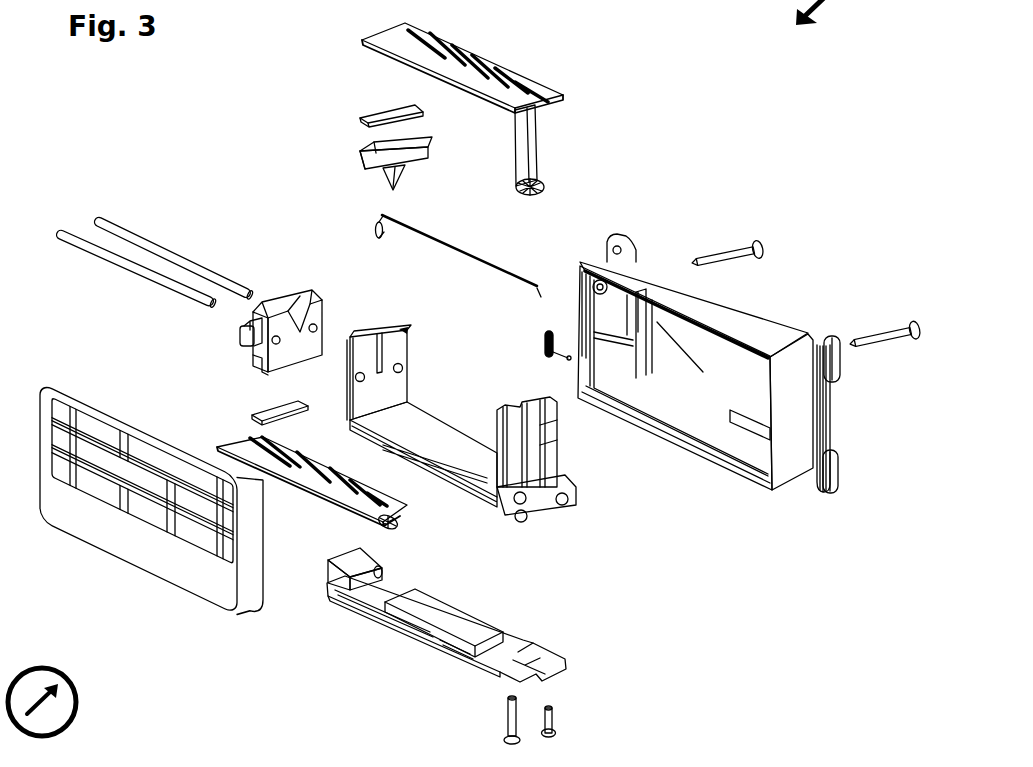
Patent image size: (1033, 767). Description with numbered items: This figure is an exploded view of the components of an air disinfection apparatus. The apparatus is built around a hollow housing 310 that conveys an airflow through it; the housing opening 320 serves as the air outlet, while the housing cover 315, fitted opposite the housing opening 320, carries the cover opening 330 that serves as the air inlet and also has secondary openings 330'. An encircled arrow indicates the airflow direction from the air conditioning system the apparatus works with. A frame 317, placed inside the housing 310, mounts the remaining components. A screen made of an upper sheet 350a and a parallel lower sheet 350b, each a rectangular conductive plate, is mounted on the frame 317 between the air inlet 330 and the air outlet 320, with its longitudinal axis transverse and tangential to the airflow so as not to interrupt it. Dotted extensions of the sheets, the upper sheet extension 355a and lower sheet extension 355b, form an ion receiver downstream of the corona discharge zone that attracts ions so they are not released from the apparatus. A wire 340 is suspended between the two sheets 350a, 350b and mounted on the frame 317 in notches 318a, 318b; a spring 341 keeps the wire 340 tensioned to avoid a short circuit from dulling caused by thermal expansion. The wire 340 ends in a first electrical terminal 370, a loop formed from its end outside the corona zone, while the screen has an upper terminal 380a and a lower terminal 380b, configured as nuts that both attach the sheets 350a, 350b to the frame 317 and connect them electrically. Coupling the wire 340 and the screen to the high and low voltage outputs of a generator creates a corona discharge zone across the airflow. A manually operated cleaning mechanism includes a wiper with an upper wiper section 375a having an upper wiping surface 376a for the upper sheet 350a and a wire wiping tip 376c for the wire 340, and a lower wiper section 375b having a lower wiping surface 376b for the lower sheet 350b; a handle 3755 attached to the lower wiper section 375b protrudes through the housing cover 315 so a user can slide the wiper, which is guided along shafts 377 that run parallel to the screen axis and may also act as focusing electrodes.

The housing 310 is at (749, 367).
The housing cover 315 is at (144, 492).
The frame 317 is at (491, 417).
The notch 318a is at (378, 350).
The notch 318b is at (522, 406).
The housing opening 320 is at (709, 366).
The cover opening 330 is at (142, 525).
The secondary openings 330' is at (124, 522).
The wire 340 is at (539, 321).
The spring 341 is at (548, 325).
The upper sheet 350a is at (431, 109).
The lower sheet 350b is at (340, 490).
The upper sheet extension 355a is at (400, 28).
The lower sheet extension 355b is at (324, 486).
The first electrical terminal 370 is at (378, 233).
The upper wiper section 375a is at (332, 179).
The lower wiper section 375b is at (275, 322).
The handle 3755 is at (238, 340).
The upper wiping surface 376a is at (366, 118).
The lower wiping surface 376b is at (258, 414).
The wire wiping tip 376c is at (385, 190).
The shafts 377 is at (80, 218).
The upper terminal 380a is at (556, 186).
The lower terminal 380b is at (414, 535).